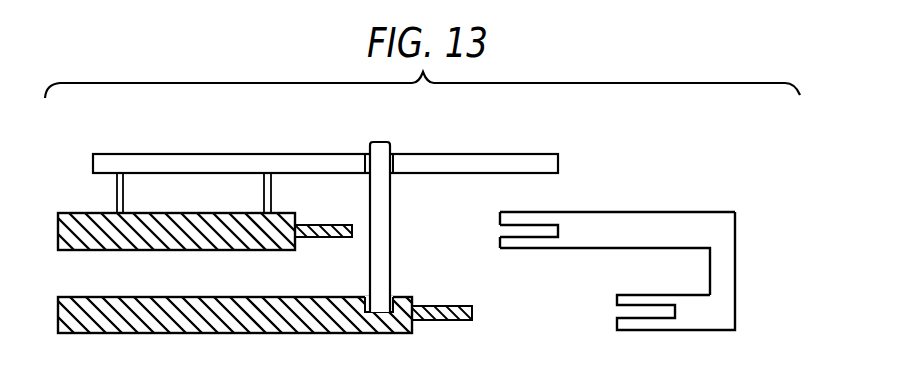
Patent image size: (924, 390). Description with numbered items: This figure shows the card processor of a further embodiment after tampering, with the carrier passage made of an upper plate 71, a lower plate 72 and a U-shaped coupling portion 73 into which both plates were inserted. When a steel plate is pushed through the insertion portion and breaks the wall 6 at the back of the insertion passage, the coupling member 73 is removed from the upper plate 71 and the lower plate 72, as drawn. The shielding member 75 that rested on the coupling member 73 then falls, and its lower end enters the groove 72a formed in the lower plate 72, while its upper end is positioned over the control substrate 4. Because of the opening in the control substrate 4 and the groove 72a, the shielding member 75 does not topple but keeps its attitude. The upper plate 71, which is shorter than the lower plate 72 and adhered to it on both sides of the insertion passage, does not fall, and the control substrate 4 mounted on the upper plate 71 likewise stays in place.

The control substrate 4 is at (524, 159).
The wall 6 is at (646, 256).
The upper plate 71 is at (157, 217).
The lower plate 72 is at (197, 322).
The groove 72a is at (372, 325).
The coupling portion 73 is at (603, 222).
The shielding member 75 is at (380, 152).